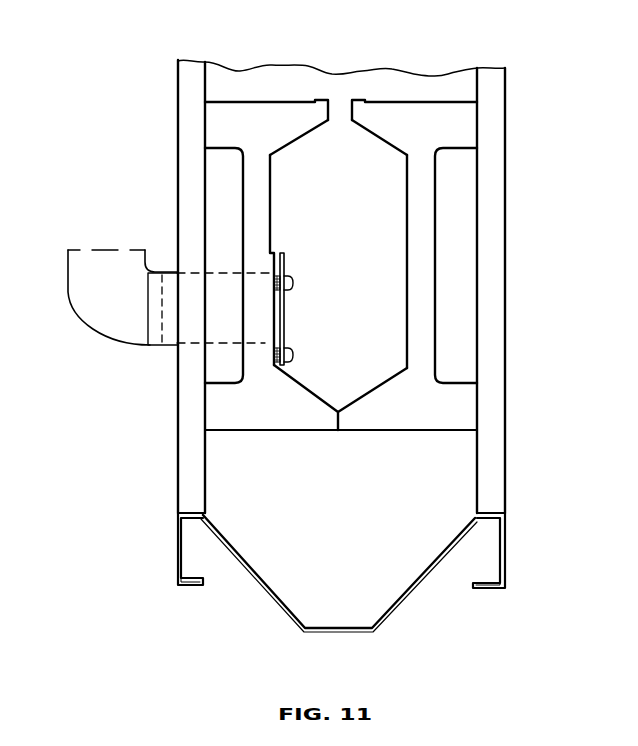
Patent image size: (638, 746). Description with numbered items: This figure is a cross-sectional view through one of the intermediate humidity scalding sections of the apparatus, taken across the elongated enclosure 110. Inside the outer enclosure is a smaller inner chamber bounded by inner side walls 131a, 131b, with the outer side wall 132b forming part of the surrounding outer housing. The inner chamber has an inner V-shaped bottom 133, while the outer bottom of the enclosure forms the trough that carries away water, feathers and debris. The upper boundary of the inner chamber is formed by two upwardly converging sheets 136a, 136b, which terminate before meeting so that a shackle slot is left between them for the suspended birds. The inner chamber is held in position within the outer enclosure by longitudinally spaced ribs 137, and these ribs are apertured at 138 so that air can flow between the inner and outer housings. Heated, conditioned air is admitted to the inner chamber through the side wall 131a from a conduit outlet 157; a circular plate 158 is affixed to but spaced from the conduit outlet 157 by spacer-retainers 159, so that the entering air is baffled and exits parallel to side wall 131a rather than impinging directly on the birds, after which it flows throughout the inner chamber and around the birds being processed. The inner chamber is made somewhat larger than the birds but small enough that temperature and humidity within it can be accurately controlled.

The elongated enclosure 110 is at (523, 103).
The inner side wall 131a is at (273, 212).
The inner side wall 131b is at (407, 237).
The outer side wall 132b is at (477, 268).
The inner V-shaped bottom 133 is at (357, 398).
The upwardly converging sheet 136a is at (293, 142).
The upwardly converging sheet 136b is at (383, 142).
The longitudinally spaced rib 137 is at (262, 419).
The aperture 138 is at (240, 230).
The conduit outlet 157 is at (170, 272).
The circular plate 158 is at (284, 310).
The spacer-retainer 159 is at (292, 280).